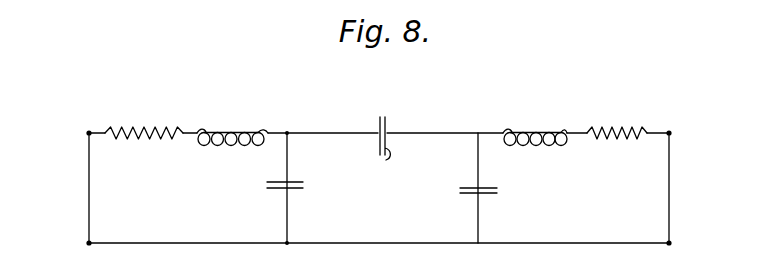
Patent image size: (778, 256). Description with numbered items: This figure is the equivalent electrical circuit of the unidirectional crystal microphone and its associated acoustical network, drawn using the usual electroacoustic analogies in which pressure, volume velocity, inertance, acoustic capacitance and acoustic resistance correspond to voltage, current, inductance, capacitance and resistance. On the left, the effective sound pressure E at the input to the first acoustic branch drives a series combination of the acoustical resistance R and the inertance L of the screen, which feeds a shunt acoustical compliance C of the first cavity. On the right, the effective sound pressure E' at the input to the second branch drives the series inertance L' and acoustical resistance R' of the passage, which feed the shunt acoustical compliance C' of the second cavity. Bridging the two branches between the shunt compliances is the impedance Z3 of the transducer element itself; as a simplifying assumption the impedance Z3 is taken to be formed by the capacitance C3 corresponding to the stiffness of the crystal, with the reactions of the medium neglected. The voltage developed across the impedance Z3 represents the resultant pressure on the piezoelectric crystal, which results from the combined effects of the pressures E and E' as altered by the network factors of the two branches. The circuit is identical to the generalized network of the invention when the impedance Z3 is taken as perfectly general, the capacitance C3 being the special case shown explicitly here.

The acoustical resistance R is at (144, 116).
The inertance L is at (232, 120).
The impedance of the transducer element Z3 is at (384, 122).
The capacitance C3 is at (387, 176).
The acoustical compliance C is at (296, 185).
The acoustical compliance C' is at (465, 188).
The inertance L' is at (535, 120).
The acoustical resistance R' is at (617, 116).
The effective sound pressure E is at (89, 188).
The effective sound pressure E' is at (668, 192).